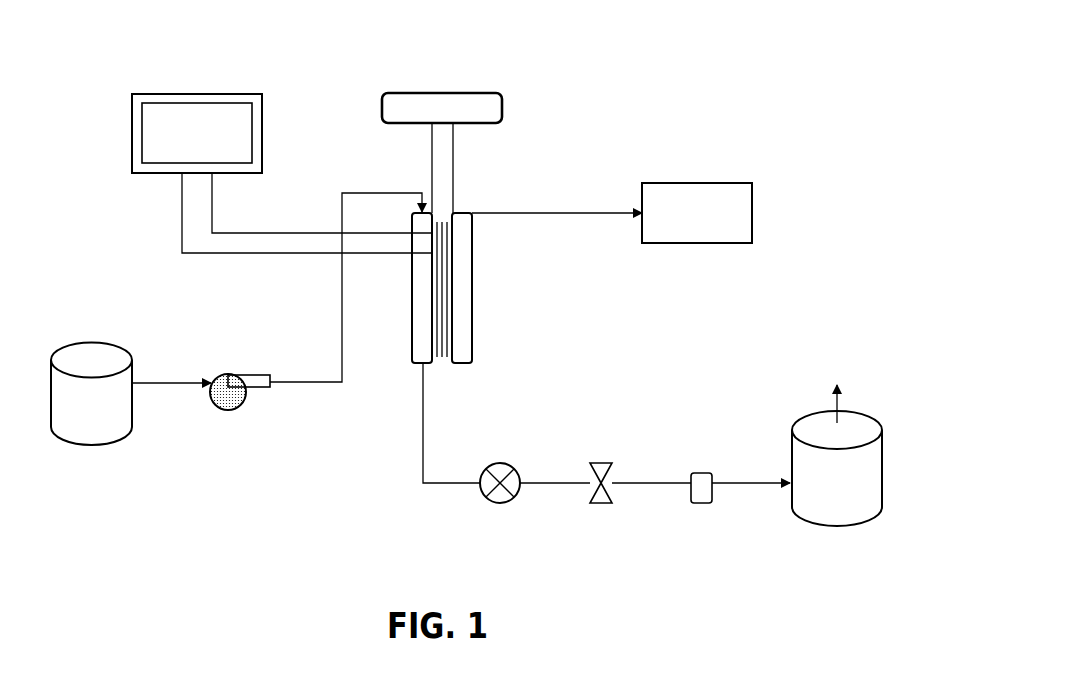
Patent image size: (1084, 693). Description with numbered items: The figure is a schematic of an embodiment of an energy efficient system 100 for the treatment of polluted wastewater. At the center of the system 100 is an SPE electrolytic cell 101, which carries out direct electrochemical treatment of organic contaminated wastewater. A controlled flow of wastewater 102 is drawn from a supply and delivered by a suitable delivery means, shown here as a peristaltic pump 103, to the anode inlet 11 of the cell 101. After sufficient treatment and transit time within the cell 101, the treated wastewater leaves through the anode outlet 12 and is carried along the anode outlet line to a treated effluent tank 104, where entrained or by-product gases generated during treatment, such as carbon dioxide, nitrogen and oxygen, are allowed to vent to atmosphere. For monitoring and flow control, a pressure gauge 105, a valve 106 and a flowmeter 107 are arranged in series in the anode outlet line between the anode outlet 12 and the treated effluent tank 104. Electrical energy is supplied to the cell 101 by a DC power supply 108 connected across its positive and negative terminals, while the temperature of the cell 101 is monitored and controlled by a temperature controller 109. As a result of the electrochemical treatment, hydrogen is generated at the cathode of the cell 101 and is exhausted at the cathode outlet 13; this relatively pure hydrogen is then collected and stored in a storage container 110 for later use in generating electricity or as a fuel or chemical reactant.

The system 100 is at (664, 64).
The SPE electrolytic cell 101 is at (462, 323).
The wastewater 102 is at (92, 363).
The peristaltic pump 103 is at (233, 397).
The treated effluent tank 104 is at (862, 483).
The pressure gauge 105 is at (512, 483).
The valve 106 is at (601, 463).
The flowmeter 107 is at (701, 473).
The DC power supply 108 is at (482, 108).
The temperature controller 109 is at (232, 130).
The storage container 110 is at (733, 213).
The anode inlet 11 is at (420, 205).
The anode outlet 12 is at (424, 364).
The cathode outlet 13 is at (472, 215).